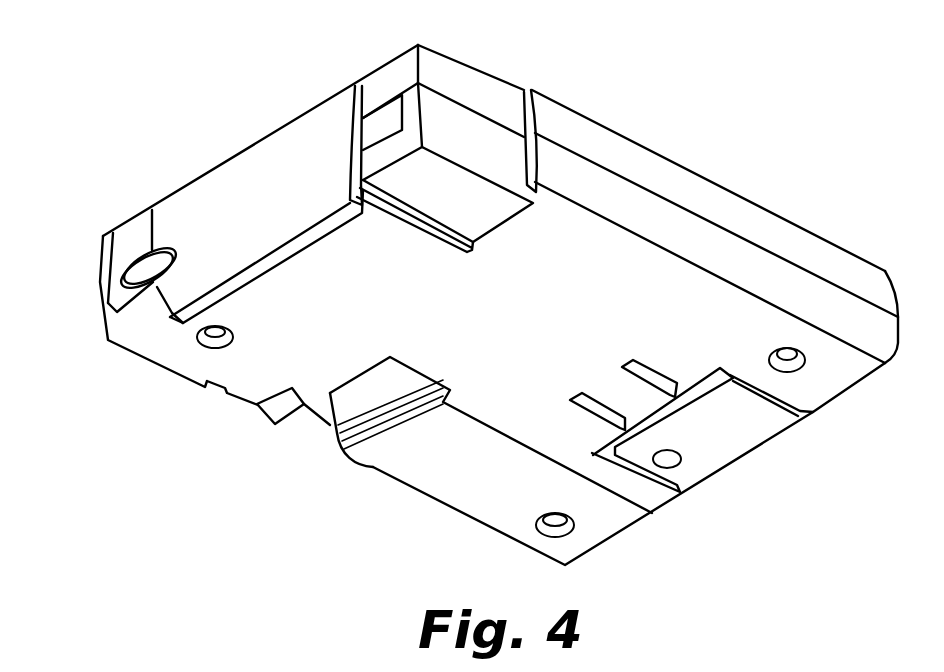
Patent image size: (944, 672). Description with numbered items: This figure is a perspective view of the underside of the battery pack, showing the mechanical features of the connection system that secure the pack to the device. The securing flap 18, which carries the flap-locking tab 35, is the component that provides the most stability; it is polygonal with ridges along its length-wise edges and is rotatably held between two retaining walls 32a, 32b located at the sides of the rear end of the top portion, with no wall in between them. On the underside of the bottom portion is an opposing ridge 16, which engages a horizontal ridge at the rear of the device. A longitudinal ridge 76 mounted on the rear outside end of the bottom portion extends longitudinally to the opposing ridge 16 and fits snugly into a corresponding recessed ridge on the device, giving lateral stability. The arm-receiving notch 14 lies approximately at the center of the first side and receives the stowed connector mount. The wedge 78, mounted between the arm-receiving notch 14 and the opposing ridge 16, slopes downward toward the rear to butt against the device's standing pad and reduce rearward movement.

The arm-receiving notch 14 is at (370, 388).
The opposing ridge 16 is at (513, 231).
The securing flap 18 is at (227, 207).
The retaining wall 32a is at (110, 284).
The retaining wall 32b is at (390, 128).
The flap-locking tab 35 is at (136, 262).
The longitudinal ridge 76 is at (427, 217).
The wedge 78 is at (273, 410).